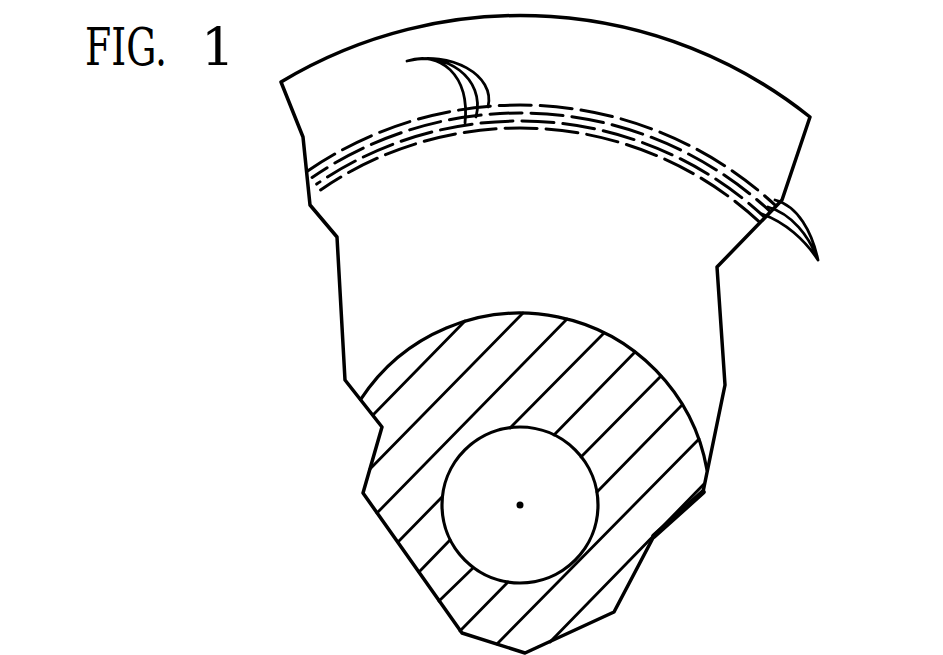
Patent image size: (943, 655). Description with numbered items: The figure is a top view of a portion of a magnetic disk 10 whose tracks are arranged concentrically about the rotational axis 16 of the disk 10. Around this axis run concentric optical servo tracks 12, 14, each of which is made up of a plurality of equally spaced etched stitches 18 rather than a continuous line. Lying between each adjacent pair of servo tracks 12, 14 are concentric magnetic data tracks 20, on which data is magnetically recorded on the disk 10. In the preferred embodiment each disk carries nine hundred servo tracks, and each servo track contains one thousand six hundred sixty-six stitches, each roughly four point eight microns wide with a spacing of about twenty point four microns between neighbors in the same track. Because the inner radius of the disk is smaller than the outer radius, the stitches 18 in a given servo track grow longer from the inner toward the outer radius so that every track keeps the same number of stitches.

The magnetic disk 10 is at (650, 485).
The optical servo track 12 is at (618, 114).
The optical servo track 14 is at (682, 148).
The rotational axis 16 is at (520, 507).
The etched stitch 18 is at (430, 87).
The magnetic data track 20 is at (805, 248).